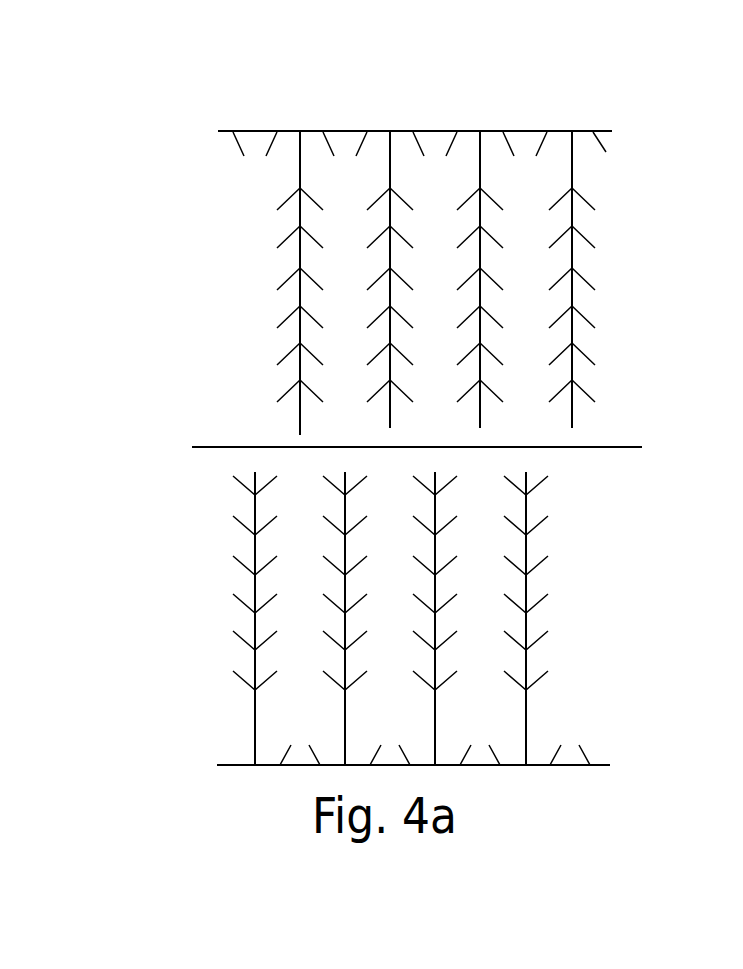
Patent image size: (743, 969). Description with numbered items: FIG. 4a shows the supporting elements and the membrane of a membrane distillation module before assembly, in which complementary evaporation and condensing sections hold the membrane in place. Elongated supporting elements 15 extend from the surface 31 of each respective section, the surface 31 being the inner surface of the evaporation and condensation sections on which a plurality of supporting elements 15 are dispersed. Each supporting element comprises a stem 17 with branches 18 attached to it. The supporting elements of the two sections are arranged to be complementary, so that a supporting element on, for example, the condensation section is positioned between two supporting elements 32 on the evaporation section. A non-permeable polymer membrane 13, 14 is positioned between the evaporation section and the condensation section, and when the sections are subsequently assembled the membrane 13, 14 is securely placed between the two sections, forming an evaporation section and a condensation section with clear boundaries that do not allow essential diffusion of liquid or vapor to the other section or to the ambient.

The non-permeable polymer membrane 13 is at (367, 494).
The non-permeable polymer membrane 14 is at (237, 447).
The supporting elements 15 is at (613, 277).
The stem 17 is at (525, 480).
The branches 18 is at (538, 564).
The surface 31 is at (573, 131).
The supporting elements 32 is at (563, 747).